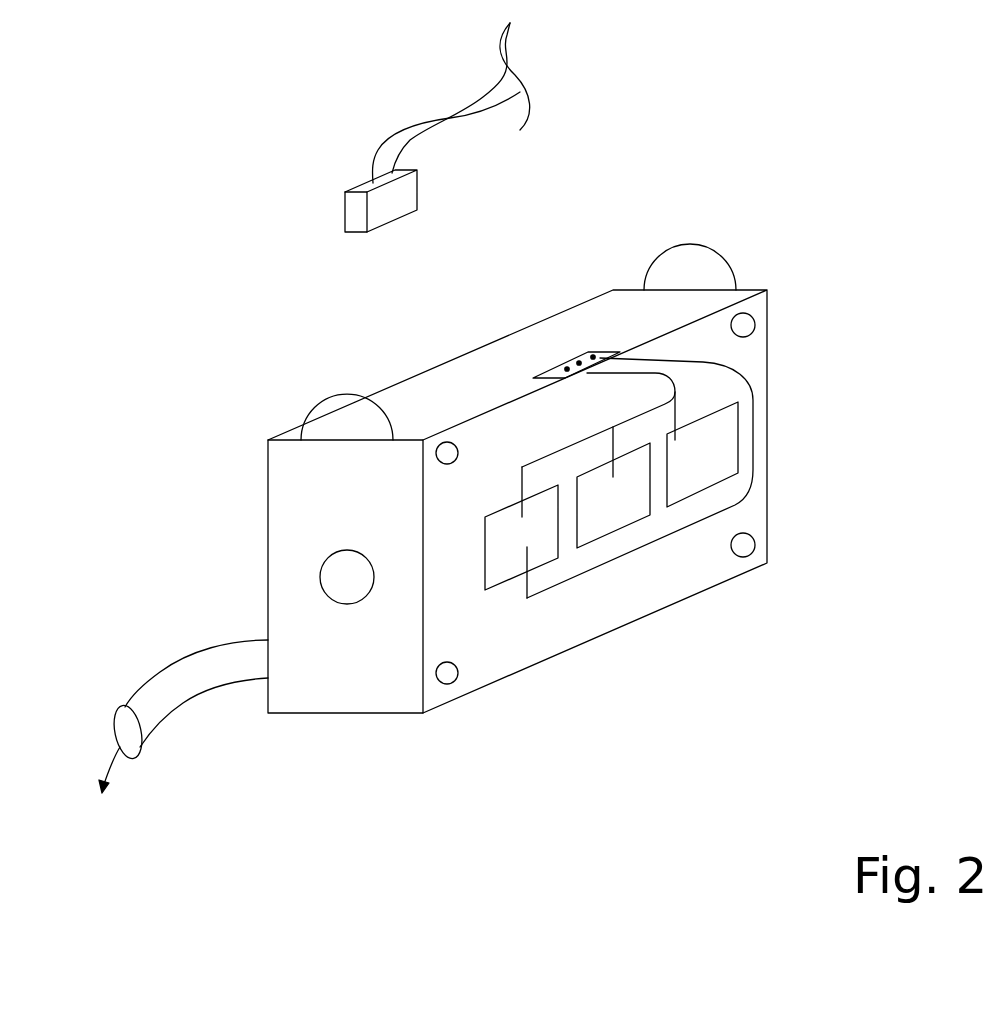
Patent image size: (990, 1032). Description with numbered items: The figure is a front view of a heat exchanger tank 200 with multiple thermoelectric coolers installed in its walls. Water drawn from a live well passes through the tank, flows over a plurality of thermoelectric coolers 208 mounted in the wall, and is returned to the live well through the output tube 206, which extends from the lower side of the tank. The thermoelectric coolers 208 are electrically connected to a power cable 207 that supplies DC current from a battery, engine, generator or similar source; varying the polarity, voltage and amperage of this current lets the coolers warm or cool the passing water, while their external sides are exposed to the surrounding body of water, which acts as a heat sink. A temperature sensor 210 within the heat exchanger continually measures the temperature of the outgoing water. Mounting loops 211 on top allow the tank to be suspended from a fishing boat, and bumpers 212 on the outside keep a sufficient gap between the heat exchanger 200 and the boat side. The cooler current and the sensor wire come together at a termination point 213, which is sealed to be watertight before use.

The heat exchanger tank 200 is at (712, 587).
The output tube 206 is at (127, 762).
The power cable 207 is at (345, 212).
The thermoelectric coolers 208 is at (698, 472).
The temperature sensor 210 is at (320, 577).
The mounting loops 211 is at (388, 420).
The bumpers 212 is at (755, 545).
The termination point 213 is at (583, 356).